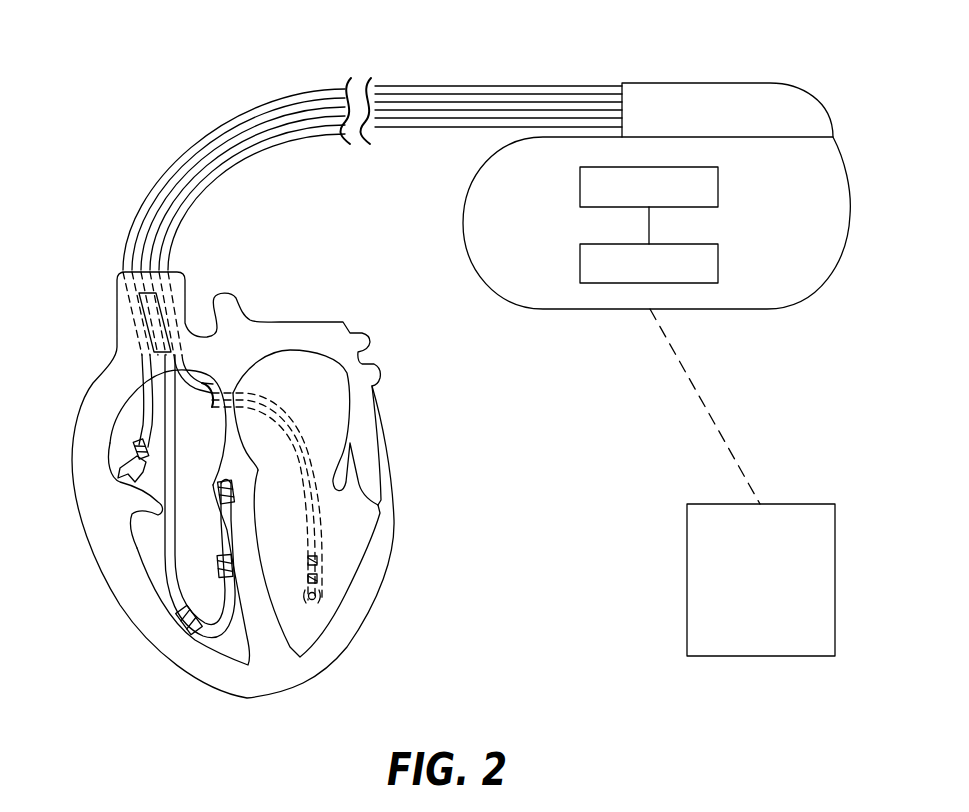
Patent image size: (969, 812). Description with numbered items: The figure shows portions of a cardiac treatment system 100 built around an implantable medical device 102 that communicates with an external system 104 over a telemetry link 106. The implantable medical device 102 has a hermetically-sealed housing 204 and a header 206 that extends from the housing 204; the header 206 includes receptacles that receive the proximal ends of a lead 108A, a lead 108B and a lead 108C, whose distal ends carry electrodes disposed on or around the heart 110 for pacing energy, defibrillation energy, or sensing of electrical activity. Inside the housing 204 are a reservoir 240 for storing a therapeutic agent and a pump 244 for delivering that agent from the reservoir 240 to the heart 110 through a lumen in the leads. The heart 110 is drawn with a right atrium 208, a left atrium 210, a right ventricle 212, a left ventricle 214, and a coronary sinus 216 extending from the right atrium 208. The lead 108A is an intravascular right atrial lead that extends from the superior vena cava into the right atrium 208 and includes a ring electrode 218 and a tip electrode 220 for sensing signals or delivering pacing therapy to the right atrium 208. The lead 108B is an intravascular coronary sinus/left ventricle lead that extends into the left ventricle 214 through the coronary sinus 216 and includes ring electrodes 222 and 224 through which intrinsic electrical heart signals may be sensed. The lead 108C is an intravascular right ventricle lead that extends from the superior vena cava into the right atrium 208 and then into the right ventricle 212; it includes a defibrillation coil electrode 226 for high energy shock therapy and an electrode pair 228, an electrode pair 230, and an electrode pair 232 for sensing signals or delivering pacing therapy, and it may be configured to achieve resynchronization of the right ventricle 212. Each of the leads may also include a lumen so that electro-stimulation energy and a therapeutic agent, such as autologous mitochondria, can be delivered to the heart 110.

The cardiac treatment system 100 is at (110, 36).
The implantable medical device 102 is at (693, 183).
The external system 104 is at (790, 504).
The telemetry link 106 is at (705, 405).
The lead 108A is at (272, 97).
The lead 108B is at (237, 160).
The lead 108C is at (215, 140).
The heart 110 is at (386, 466).
The housing 204 is at (852, 207).
The header 206 is at (790, 83).
The right atrium 208 is at (157, 480).
The left atrium 210 is at (297, 377).
The right ventricle 212 is at (152, 533).
The left ventricle 214 is at (313, 623).
The coronary sinus 216 is at (198, 410).
The ring electrode 218 is at (143, 450).
The tip electrode 220 is at (127, 478).
The ring electrode 222 is at (318, 562).
The ring electrode 224 is at (317, 583).
The defibrillation coil electrode 226 is at (140, 323).
The electrode pair 228 is at (234, 495).
The electrode pair 230 is at (233, 562).
The electrode pair 232 is at (183, 620).
The reservoir 240 is at (718, 186).
The pump 244 is at (718, 261).